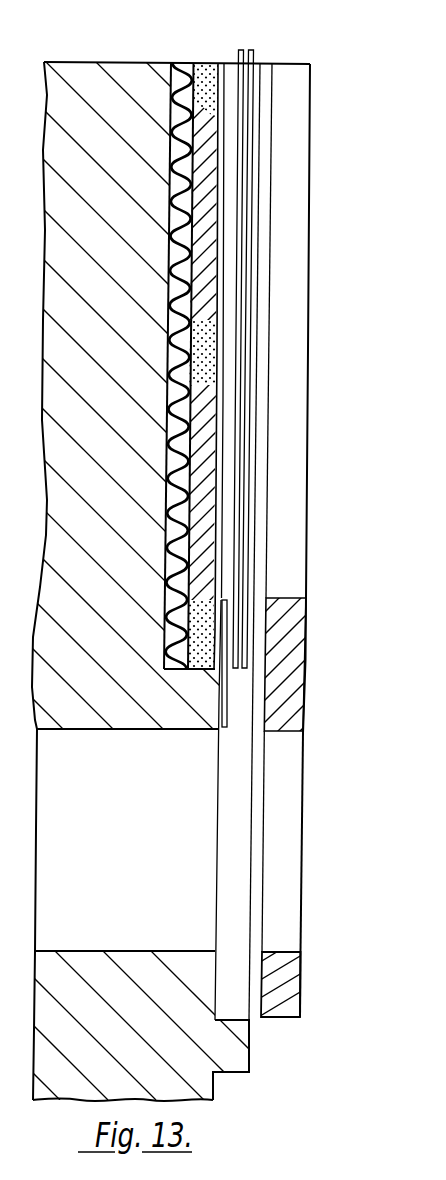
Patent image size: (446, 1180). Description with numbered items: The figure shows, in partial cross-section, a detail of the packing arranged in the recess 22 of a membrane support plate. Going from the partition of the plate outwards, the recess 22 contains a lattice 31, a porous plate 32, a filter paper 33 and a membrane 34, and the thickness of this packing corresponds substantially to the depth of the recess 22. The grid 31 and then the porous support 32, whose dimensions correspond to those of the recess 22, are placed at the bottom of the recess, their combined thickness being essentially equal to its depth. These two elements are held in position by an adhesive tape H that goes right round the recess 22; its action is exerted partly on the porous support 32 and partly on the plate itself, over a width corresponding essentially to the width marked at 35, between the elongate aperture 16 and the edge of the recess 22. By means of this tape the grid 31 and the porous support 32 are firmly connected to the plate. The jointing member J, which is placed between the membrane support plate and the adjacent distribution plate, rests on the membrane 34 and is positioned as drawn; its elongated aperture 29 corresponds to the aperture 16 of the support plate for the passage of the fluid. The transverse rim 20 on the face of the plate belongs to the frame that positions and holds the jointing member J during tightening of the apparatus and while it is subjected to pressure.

The recess 22 is at (185, 153).
The membrane 34 is at (255, 95).
The filter paper 33 is at (242, 181).
The porous plate 32 is at (207, 262).
The lattice 31 is at (185, 354).
The adhesive tape H is at (225, 625).
The jointing member J is at (285, 680).
The width between aperture and recess edge 35 is at (198, 700).
The elongated aperture 29 is at (282, 795).
The elongate aperture 16 is at (180, 850).
The transverse rim 20 is at (230, 1047).